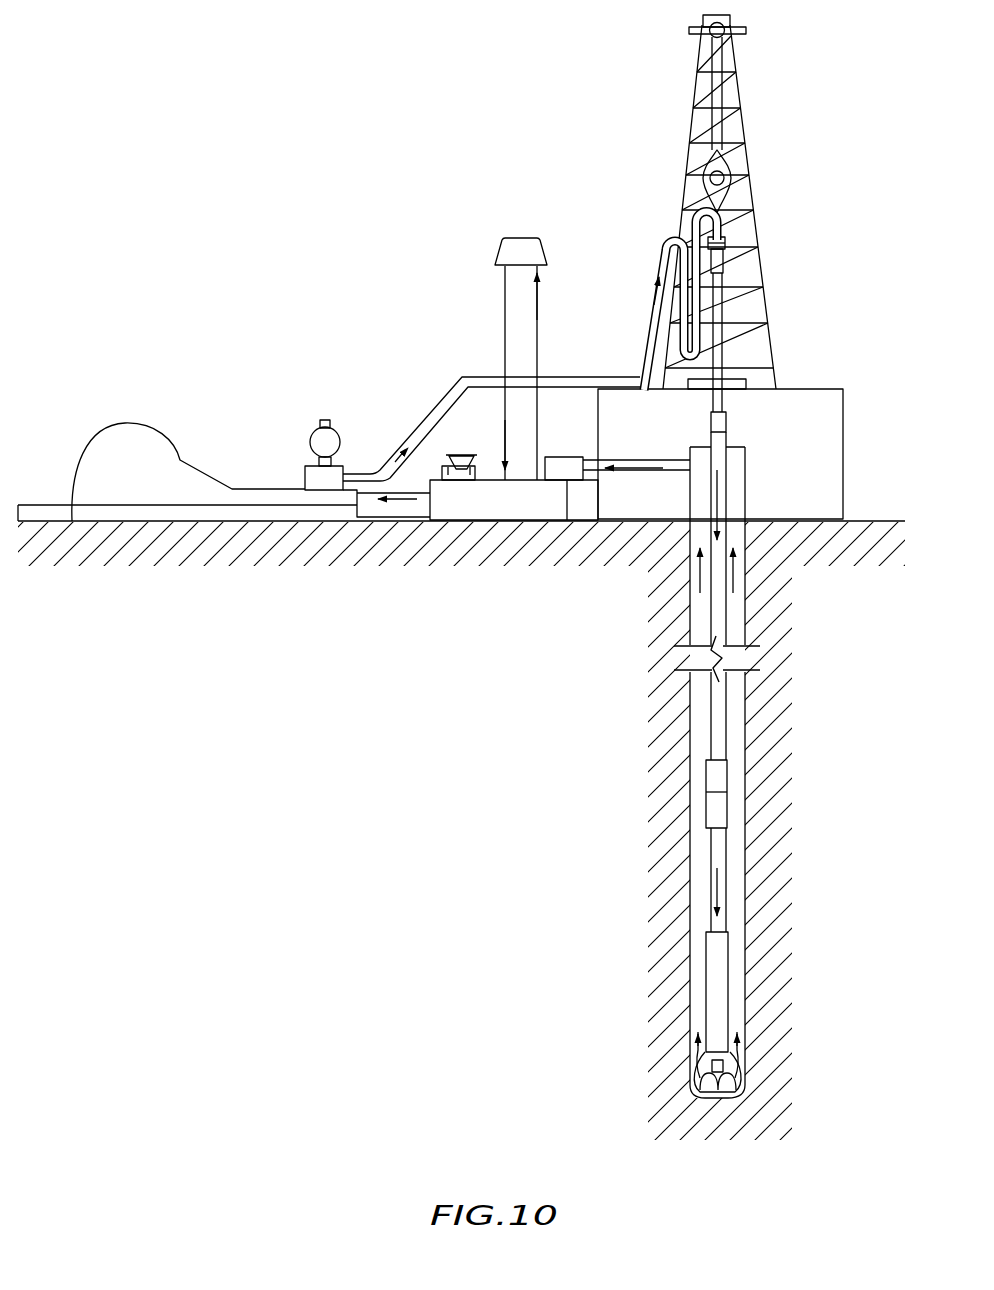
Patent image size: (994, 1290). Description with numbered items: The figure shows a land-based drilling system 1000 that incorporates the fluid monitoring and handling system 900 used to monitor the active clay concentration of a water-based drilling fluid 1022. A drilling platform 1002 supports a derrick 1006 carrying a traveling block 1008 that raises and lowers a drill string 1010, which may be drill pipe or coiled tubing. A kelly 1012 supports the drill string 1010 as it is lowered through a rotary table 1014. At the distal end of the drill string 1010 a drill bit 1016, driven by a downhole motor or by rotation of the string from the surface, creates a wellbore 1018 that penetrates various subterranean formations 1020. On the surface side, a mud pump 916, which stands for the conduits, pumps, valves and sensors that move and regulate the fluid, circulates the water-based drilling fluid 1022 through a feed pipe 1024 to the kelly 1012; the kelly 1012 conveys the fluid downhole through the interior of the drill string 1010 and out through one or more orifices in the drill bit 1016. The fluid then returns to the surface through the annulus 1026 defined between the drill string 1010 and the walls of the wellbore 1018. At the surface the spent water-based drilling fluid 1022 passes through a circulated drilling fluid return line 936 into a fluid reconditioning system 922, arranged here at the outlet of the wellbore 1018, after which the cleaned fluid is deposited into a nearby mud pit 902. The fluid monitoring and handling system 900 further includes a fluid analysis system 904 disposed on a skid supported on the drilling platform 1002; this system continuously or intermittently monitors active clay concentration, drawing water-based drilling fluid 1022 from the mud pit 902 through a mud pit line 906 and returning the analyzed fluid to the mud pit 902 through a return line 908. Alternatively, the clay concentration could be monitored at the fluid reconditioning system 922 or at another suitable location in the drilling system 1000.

The drilling system 1000 is at (400, 103).
The fluid monitoring and handling system 900 is at (317, 327).
The drilling platform 1002 is at (843, 400).
The derrick 1006 is at (748, 122).
The traveling block 1008 is at (737, 163).
The kelly 1012 is at (722, 295).
The rotary table 1014 is at (744, 386).
The drill string 1010 is at (722, 624).
The wellbore 1018 is at (744, 760).
The annulus 1026 is at (736, 982).
The drill bit 1016 is at (730, 1075).
The subterranean formations 1020 is at (555, 788).
The water-based drilling fluid 1022 is at (700, 582).
The feed pipe 1024 is at (482, 380).
The mud pump 916 is at (142, 488).
The mud pit 902 is at (540, 507).
The fluid analysis system 904 is at (522, 237).
The mud pit line 906 is at (537, 300).
The return line 908 is at (505, 290).
The fluid reconditioning system 922 is at (562, 457).
The circulated drilling fluid return line 936 is at (685, 470).